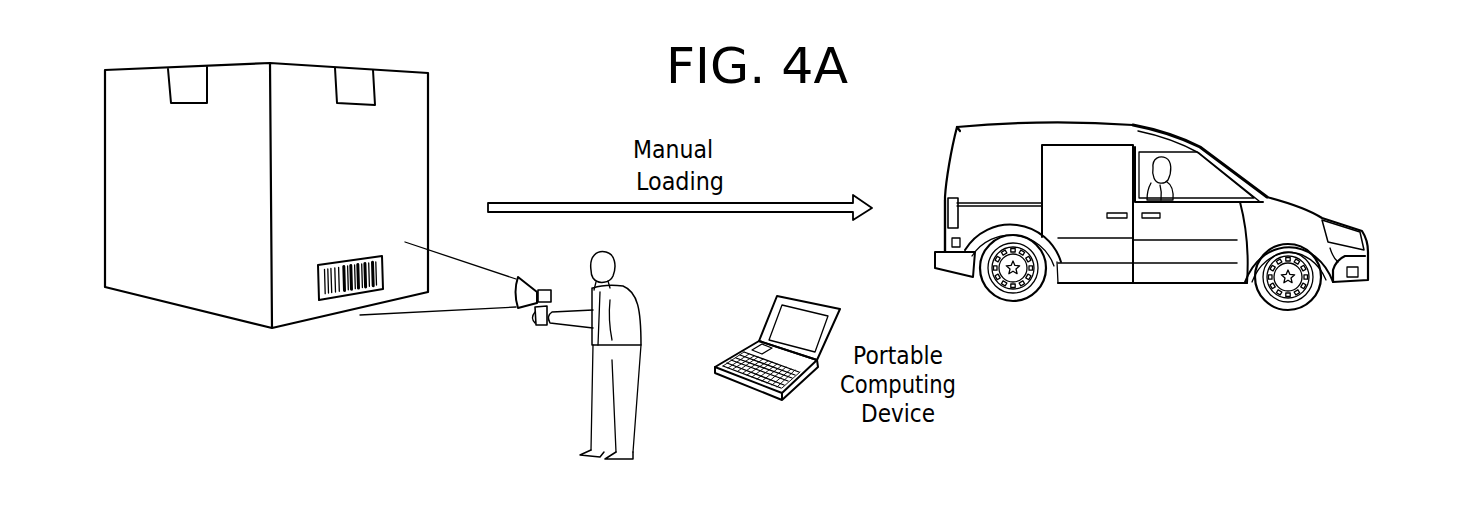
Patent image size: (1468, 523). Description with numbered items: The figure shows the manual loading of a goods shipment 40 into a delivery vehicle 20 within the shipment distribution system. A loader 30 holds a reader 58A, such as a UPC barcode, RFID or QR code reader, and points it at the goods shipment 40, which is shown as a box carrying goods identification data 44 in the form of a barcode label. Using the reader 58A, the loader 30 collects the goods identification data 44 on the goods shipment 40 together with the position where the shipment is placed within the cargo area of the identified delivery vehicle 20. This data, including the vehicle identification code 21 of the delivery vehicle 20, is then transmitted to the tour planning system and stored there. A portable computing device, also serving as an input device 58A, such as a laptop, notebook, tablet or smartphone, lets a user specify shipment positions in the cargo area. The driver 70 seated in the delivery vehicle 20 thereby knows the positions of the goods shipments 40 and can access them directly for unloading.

The delivery vehicle 20 is at (1137, 122).
The vehicle identification code 21 is at (935, 240).
The loader 30 is at (620, 395).
The goods shipment 40 is at (413, 127).
The goods identification data 44 is at (333, 303).
The reader / input device 58A is at (506, 330).
The driver 70 is at (1225, 157).